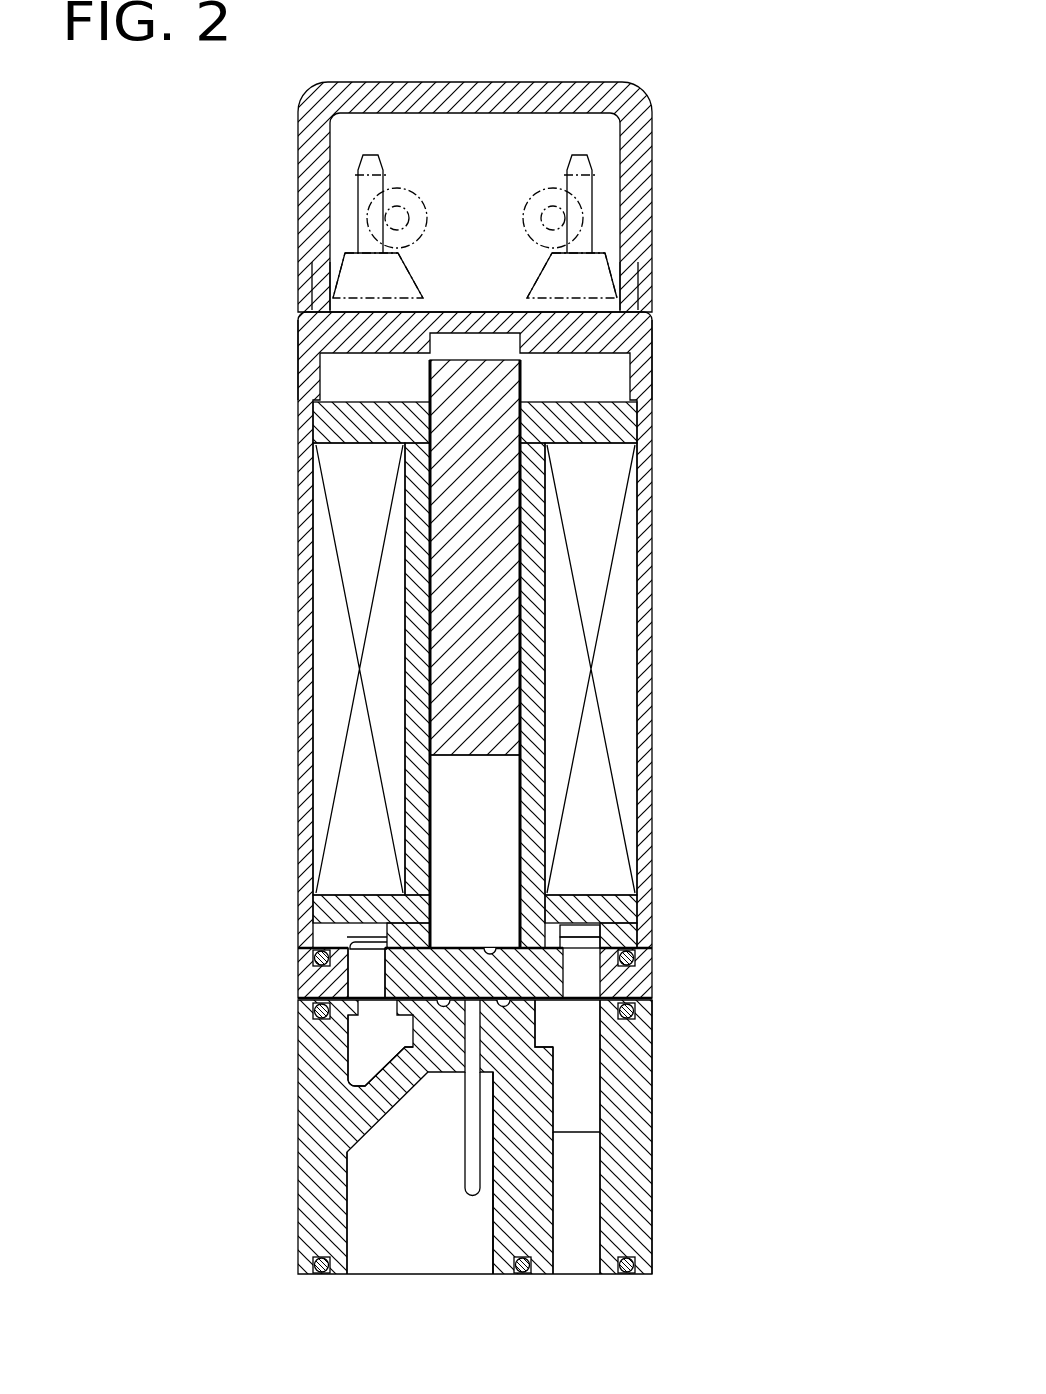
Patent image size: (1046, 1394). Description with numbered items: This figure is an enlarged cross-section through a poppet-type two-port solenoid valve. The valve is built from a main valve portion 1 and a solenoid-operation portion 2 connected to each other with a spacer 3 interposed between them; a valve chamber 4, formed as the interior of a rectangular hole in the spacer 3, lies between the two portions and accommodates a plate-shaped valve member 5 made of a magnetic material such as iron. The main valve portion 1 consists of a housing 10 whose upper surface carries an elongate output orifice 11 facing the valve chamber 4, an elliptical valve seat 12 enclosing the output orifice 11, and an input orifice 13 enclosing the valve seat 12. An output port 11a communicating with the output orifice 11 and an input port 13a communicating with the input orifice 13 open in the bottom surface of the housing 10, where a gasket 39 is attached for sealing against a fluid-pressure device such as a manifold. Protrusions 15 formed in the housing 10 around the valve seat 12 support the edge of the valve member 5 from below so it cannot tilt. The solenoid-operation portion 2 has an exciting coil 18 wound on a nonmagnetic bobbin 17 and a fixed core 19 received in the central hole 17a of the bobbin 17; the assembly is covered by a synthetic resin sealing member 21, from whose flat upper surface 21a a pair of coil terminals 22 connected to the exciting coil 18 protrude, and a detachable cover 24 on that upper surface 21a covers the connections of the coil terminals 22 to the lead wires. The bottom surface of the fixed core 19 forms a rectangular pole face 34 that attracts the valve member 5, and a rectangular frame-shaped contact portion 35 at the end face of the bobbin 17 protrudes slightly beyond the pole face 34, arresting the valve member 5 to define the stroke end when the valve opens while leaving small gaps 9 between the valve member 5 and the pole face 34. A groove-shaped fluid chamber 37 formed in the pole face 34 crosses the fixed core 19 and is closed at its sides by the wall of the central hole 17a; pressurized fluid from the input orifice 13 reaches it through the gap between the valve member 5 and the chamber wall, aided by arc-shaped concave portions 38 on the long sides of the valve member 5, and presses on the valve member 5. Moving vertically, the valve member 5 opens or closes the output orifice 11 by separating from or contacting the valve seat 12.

The main valve portion 1 is at (668, 1154).
The solenoid-operation portion 2 is at (667, 380).
The spacer 3 is at (645, 973).
The valve chamber 4 is at (358, 978).
The valve member 5 is at (345, 935).
The armature 9 is at (447, 952).
The housing 10 is at (640, 1222).
The output orifice 11 is at (415, 1043).
The output port 11a is at (418, 1275).
The valve seat 12 is at (473, 1003).
The input orifice 13 is at (568, 1008).
The input port 13a is at (560, 1275).
The protrusions 15 is at (575, 1040).
The bobbin 17 is at (530, 612).
The central hole 17a is at (425, 532).
The exciting coil 18 is at (340, 648).
The fixed core 19 is at (495, 497).
The sealing member 21 is at (305, 370).
The flat upper surface 21a is at (372, 302).
The coil terminals 22 is at (365, 192).
The cover 24 is at (483, 90).
The pole face 34 is at (543, 895).
The contact portion 35 is at (543, 943).
The fluid chamber 37 is at (487, 826).
The concave portions 38 is at (310, 960).
The gasket 39 is at (322, 1275).